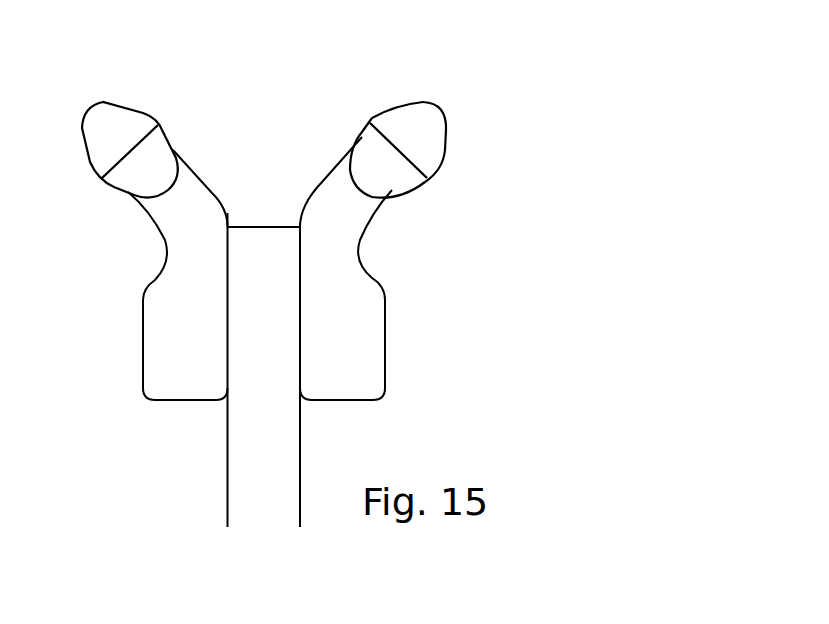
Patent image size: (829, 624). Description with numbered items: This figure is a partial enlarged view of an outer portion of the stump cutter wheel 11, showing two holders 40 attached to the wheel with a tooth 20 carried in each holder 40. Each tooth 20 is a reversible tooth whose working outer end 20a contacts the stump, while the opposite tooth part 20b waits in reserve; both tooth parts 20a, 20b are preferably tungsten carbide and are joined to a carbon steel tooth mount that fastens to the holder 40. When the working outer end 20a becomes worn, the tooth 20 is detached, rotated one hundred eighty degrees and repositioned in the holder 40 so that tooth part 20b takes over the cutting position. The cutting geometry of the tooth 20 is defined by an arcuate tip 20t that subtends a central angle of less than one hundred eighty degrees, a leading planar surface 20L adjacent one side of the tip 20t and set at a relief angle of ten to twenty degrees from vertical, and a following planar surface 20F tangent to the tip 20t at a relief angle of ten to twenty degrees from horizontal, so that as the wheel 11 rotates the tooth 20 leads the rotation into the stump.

The stump cutter wheel 11 is at (270, 473).
The holder 40 is at (152, 333).
The tooth 20 is at (481, 146).
The tip 20t is at (435, 103).
The working outer end 20a is at (433, 123).
The following planar surface 20F is at (440, 150).
The tooth part 20b is at (394, 180).
The leading planar surface 20L is at (400, 107).